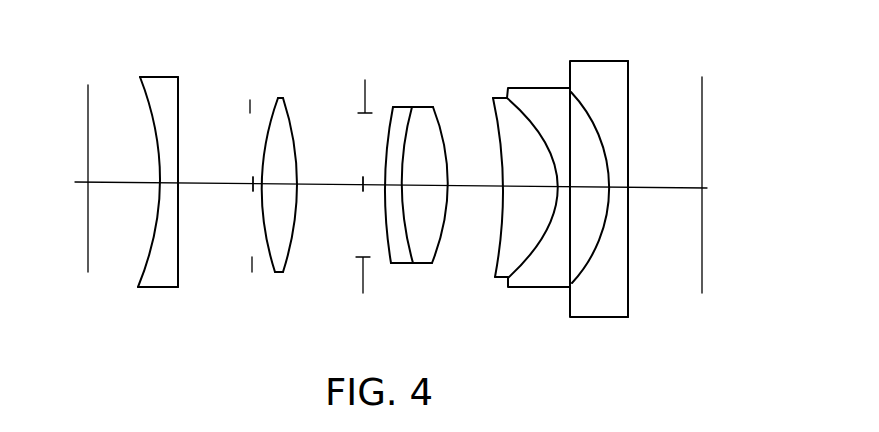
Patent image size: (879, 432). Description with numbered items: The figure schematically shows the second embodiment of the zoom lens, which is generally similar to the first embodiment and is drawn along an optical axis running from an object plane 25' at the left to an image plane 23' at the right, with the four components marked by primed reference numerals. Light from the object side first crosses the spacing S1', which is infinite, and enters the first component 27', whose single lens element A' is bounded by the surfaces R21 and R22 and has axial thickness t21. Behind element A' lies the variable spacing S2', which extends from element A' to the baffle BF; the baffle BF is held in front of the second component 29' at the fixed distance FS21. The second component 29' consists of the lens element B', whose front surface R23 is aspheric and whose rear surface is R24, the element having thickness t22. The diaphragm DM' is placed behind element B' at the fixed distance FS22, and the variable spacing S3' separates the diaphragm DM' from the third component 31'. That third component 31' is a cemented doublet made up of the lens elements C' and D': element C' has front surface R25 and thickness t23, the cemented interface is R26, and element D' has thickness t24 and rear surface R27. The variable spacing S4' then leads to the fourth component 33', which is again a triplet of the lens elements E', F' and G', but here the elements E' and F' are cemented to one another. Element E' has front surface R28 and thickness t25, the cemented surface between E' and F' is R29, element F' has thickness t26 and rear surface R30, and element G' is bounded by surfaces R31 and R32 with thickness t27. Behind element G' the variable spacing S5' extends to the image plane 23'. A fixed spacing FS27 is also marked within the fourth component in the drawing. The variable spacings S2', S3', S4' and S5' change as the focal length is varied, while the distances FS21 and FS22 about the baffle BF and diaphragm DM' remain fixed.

The object plane 25' is at (70, 156).
The image plane 23' is at (732, 160).
The first component 27' is at (156, 161).
The second component 29' is at (287, 178).
The third component 31' is at (407, 179).
The fourth component 33' is at (574, 192).
The lens element A' is at (156, 182).
The lens element B' is at (270, 195).
The lens element C' is at (374, 197).
The lens element D' is at (442, 203).
The lens element E' is at (482, 196).
The lens element F' is at (583, 196).
The lens element G' is at (631, 214).
The front surface radius of element A' R21 is at (148, 111).
The rear surface radius of element A' R22 is at (180, 107).
The aspheric surface of element B' R23 is at (263, 137).
The rear surface radius of element B' R24 is at (292, 128).
The front surface radius of element C' R25 is at (387, 150).
The cemented surface radius between C' and D' R26 is at (408, 128).
The rear surface radius of element D' R27 is at (445, 142).
The front surface radius of element E' R28 is at (495, 117).
The cemented surface radius between E' and F' R29 is at (507, 97).
The rear surface radius of element F' R30 is at (573, 117).
The front surface radius of element G' R31 is at (598, 137).
The rear surface radius of element G' R32 is at (630, 167).
The object spacing S1' is at (110, 152).
The variable spacing S2' is at (206, 153).
The variable spacing S3' is at (339, 158).
The variable spacing S4' is at (487, 160).
The variable spacing S5' is at (684, 240).
The thickness of element A' t21 is at (162, 196).
The thickness of element B' t22 is at (273, 182).
The thickness of element C' t23 is at (388, 185).
The thickness of element D' t24 is at (422, 190).
The thickness of element E' t25 is at (523, 188).
The thickness of element F' t26 is at (557, 210).
The thickness of element G' t27 is at (618, 190).
The fixed spacing FS21 is at (252, 192).
The fixed spacing FS22 is at (332, 188).
The field stop FS27 is at (608, 190).
The baffle BF is at (252, 264).
The diaphragm DM' is at (342, 207).